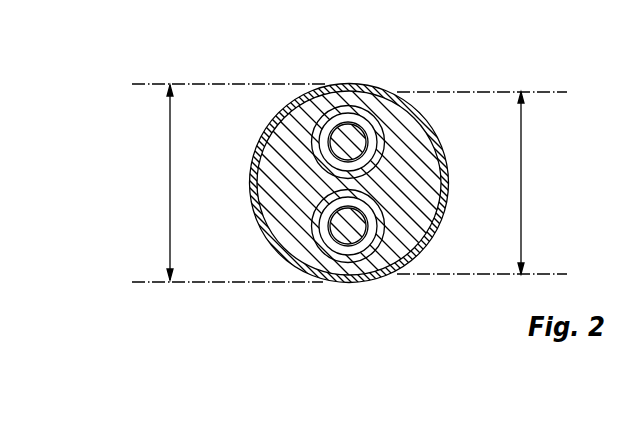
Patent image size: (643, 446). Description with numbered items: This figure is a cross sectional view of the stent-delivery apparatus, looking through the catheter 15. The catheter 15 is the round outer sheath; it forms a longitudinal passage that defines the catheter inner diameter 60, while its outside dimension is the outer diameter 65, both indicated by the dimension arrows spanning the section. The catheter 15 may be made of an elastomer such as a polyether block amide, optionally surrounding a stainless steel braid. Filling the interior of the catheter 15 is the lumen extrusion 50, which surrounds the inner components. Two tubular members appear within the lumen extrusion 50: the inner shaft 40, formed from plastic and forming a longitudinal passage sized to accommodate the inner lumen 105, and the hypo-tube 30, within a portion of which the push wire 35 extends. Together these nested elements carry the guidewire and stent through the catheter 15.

The catheter 15 is at (340, 277).
The hypo-tube 30 is at (378, 252).
The push wire 35 is at (343, 255).
The inner shaft 40 is at (380, 120).
The lumen extrusion 50 is at (416, 190).
The catheter inner diameter 60 is at (521, 163).
The outer diameter 65 is at (170, 146).
The inner lumen 105 is at (344, 135).